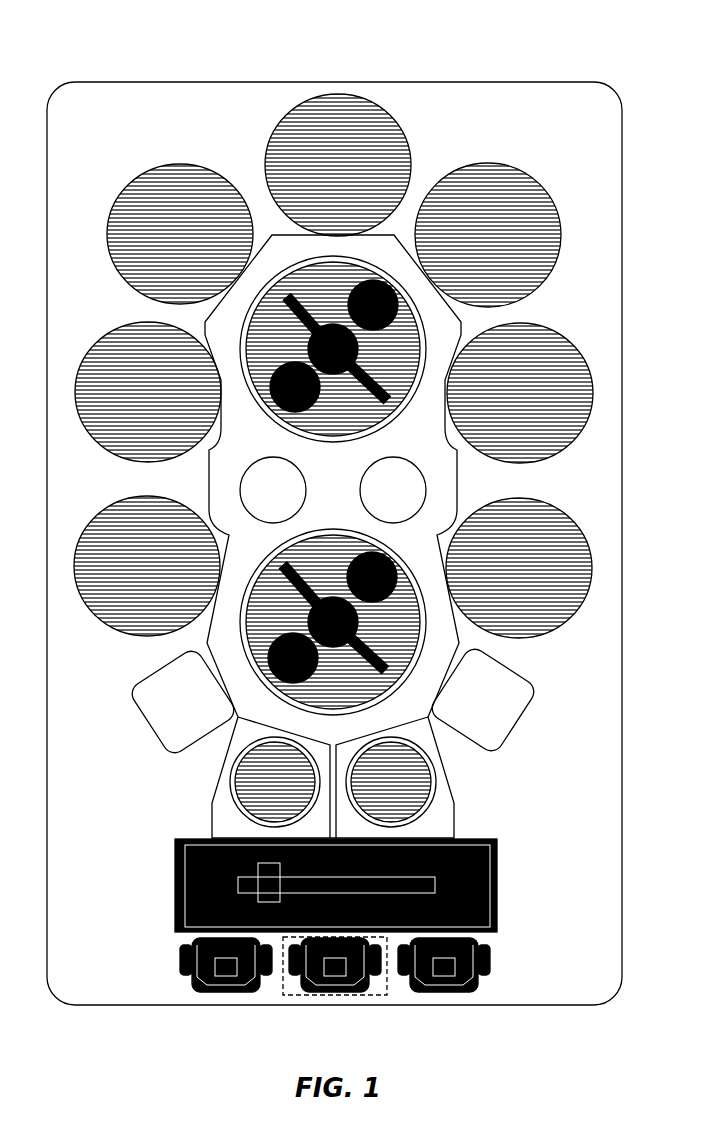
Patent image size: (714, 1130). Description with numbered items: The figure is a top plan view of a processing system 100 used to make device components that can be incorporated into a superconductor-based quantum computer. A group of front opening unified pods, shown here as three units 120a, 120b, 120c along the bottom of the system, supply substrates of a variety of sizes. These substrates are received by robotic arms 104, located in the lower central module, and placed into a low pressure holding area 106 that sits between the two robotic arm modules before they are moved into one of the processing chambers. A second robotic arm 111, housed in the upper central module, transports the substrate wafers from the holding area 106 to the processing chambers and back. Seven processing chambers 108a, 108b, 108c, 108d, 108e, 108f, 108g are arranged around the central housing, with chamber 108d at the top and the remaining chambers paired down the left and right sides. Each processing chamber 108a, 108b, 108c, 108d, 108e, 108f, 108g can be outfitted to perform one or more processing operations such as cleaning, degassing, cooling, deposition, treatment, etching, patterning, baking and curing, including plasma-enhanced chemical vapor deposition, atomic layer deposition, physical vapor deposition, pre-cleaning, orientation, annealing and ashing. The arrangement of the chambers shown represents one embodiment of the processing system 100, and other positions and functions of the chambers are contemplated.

The processing system 100 is at (108, 72).
The processing chamber 108a is at (498, 577).
The processing chamber 108b is at (499, 402).
The processing chamber 108c is at (467, 244).
The processing chamber 108d is at (317, 174).
The processing chamber 108e is at (159, 243).
The processing chamber 108f is at (127, 401).
The processing chamber 108g is at (126, 575).
The second robotic arm 111 is at (319, 358).
The robotic arms 104 is at (319, 631).
The low pressure holding area 106 is at (318, 503).
The connector 120a is at (180, 966).
The connector 120b is at (348, 996).
The connector 120c is at (492, 969).